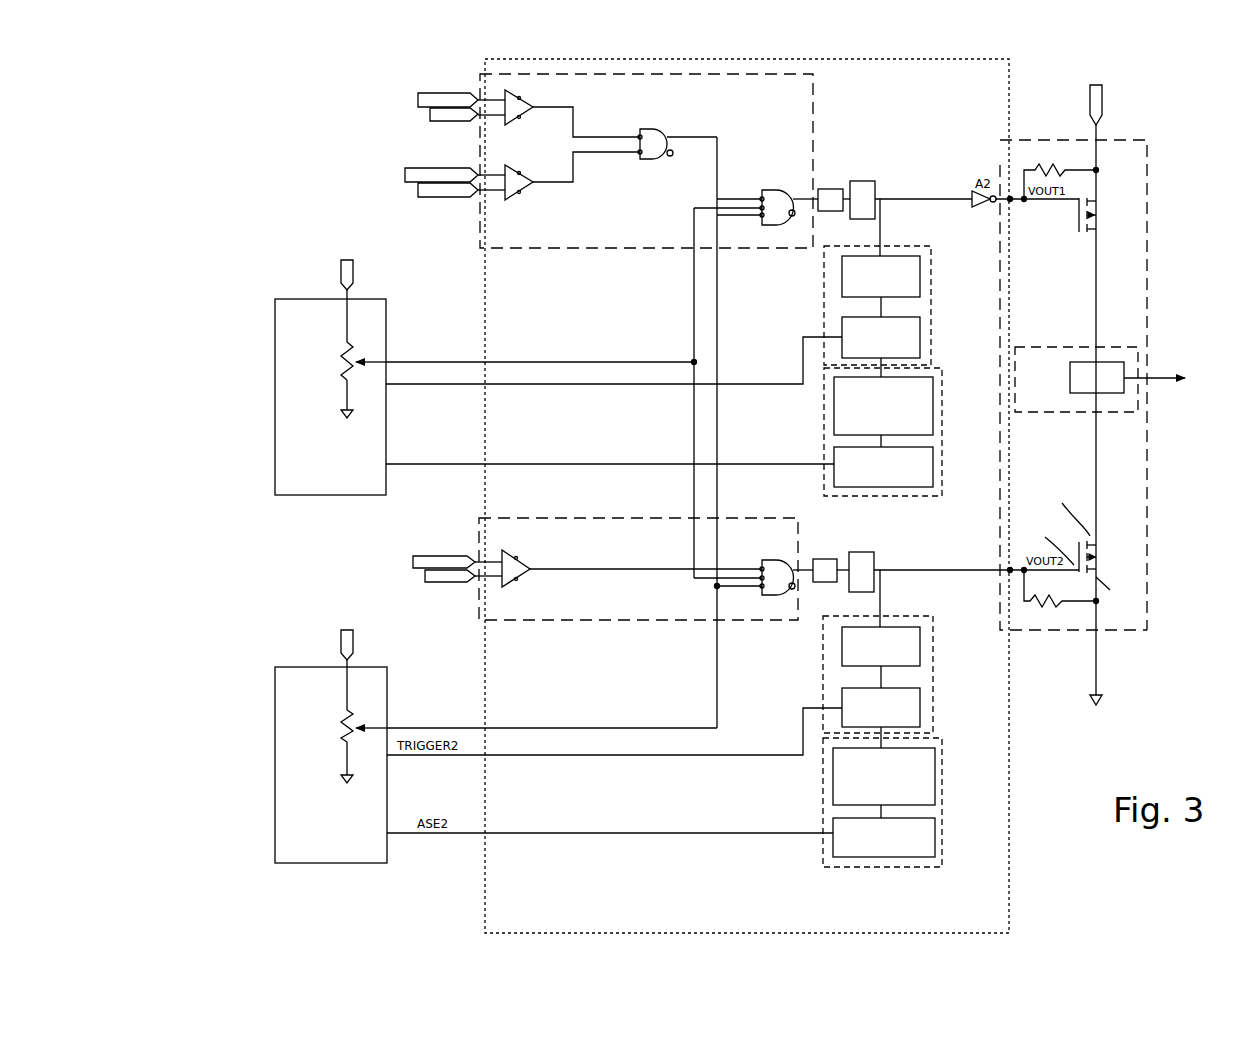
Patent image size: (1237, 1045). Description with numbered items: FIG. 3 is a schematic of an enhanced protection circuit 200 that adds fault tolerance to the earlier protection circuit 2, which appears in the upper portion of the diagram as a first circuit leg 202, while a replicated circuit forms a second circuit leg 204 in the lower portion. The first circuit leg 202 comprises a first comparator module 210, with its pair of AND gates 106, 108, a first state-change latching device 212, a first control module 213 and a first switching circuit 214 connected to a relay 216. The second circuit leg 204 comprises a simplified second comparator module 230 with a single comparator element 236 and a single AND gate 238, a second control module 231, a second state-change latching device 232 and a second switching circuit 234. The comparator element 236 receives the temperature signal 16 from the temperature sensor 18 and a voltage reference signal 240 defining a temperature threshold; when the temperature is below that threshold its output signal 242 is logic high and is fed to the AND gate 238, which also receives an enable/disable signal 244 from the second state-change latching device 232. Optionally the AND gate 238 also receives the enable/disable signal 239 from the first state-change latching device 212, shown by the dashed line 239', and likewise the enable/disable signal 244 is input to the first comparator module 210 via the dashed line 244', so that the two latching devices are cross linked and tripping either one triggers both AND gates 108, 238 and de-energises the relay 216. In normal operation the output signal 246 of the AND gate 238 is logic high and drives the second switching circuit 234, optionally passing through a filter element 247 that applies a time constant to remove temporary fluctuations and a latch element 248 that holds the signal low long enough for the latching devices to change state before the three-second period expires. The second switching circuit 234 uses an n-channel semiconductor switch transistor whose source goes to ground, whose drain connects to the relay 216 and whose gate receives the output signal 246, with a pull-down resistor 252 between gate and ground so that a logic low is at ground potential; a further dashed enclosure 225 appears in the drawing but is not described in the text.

The enhanced protection circuit 200 is at (360, 125).
The protection circuit 2 is at (270, 240).
The first circuit leg 202 is at (262, 322).
The second circuit leg 204 is at (245, 640).
The first state-change latching device 212 is at (395, 317).
The second state-change latching device 232 is at (376, 865).
The first comparator module 210 is at (770, 74).
The second comparator module 230 is at (590, 620).
The AND gate 106 is at (650, 137).
The AND gate 108 is at (768, 192).
The comparator element 236 is at (510, 552).
The AND gate 238 is at (773, 596).
The temperature signal 16 is at (470, 558).
The temperature sensor 18 is at (420, 562).
The voltage reference signal 240 is at (445, 590).
The enable/disable signal 239 is at (541, 324).
The dashed line 239' is at (645, 393).
The enable/disable signal 244 is at (552, 701).
The dashed line 244' is at (765, 432).
The output signal 242 is at (668, 572).
The output signal 246 is at (795, 528).
The filter element 247 is at (830, 193).
The latch element 248 is at (862, 197).
The first control module 213 is at (931, 352).
The second control module 231 is at (940, 838).
The first switching circuit 214 is at (1005, 168).
The relay 216 is at (1078, 395).
The second switch unit 225 is at (1117, 528).
The pull-down resistor 252 is at (1040, 608).
The second switching circuit 234 is at (1062, 635).